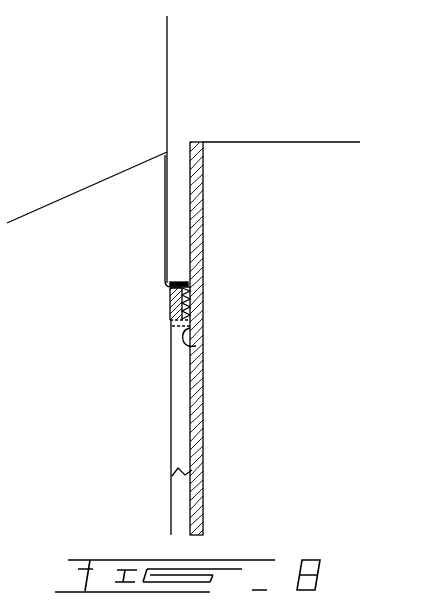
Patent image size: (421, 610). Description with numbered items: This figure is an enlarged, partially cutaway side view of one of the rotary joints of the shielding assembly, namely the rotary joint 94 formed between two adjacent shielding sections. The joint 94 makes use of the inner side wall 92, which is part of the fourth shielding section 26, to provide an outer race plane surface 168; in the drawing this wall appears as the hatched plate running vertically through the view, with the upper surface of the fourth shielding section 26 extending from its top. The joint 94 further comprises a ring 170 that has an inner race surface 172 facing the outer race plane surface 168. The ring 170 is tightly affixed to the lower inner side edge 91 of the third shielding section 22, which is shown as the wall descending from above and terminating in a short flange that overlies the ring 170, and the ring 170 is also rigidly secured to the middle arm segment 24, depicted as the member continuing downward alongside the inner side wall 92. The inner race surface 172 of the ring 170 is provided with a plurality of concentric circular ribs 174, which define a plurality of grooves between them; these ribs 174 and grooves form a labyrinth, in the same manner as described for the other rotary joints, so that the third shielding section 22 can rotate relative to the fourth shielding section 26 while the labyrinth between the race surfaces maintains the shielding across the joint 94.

The third shielding section 22 is at (172, 90).
The middle arm segment 24 is at (158, 408).
The fourth shielding section 26 is at (271, 128).
The lower inner side edge 91 is at (167, 265).
The inner side wall 92 is at (199, 380).
The rotary joint 94 is at (189, 264).
The outer race plane surface 168 is at (200, 345).
The ring 170 is at (177, 304).
The inner race surface 172 is at (186, 328).
The concentric circular ribs 174 is at (190, 310).